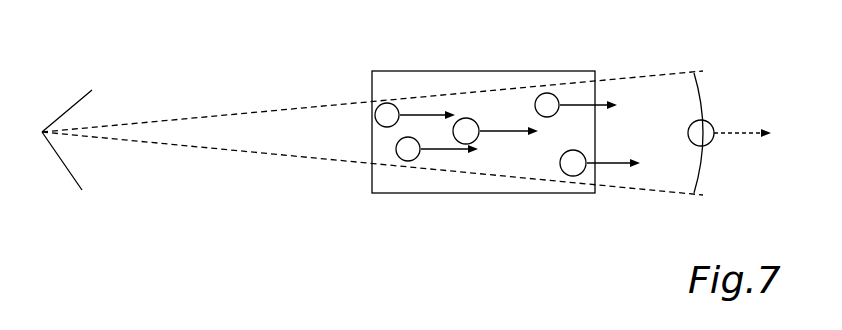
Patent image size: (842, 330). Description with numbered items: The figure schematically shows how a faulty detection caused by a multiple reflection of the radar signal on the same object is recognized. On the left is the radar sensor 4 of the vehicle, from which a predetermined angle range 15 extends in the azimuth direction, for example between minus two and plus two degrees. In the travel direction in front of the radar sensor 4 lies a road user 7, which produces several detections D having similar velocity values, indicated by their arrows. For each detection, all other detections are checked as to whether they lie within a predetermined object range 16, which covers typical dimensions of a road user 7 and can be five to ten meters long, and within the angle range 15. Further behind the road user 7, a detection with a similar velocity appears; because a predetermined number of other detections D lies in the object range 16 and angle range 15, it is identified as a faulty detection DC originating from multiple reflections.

The radar sensor 4 is at (58, 120).
The angle range 15 is at (210, 118).
The road user 7 is at (479, 62).
The detections D is at (386, 102).
The object range 16 is at (647, 92).
The faulty detection DC is at (717, 112).